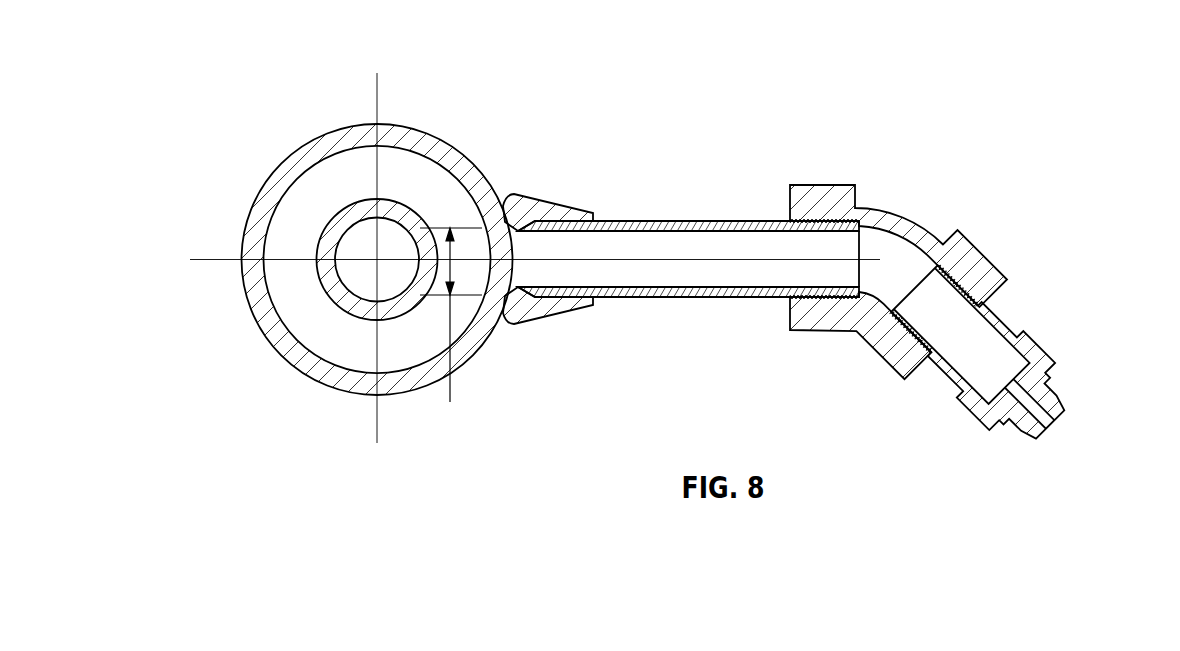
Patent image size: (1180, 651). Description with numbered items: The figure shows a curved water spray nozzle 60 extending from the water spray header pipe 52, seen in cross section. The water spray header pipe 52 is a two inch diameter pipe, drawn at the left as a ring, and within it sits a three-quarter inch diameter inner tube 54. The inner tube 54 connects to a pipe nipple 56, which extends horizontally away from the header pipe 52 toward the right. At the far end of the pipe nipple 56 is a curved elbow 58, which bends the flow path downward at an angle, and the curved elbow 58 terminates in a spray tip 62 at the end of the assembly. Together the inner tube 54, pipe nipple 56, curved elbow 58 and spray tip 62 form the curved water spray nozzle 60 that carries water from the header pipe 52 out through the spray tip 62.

The water spray header pipe 52 is at (331, 126).
The inner tube 54 is at (325, 220).
The pipe nipple 56 is at (638, 219).
The curved elbow 58 is at (901, 213).
The curved water spray nozzle 60 is at (663, 246).
The spray tip 62 is at (1062, 410).